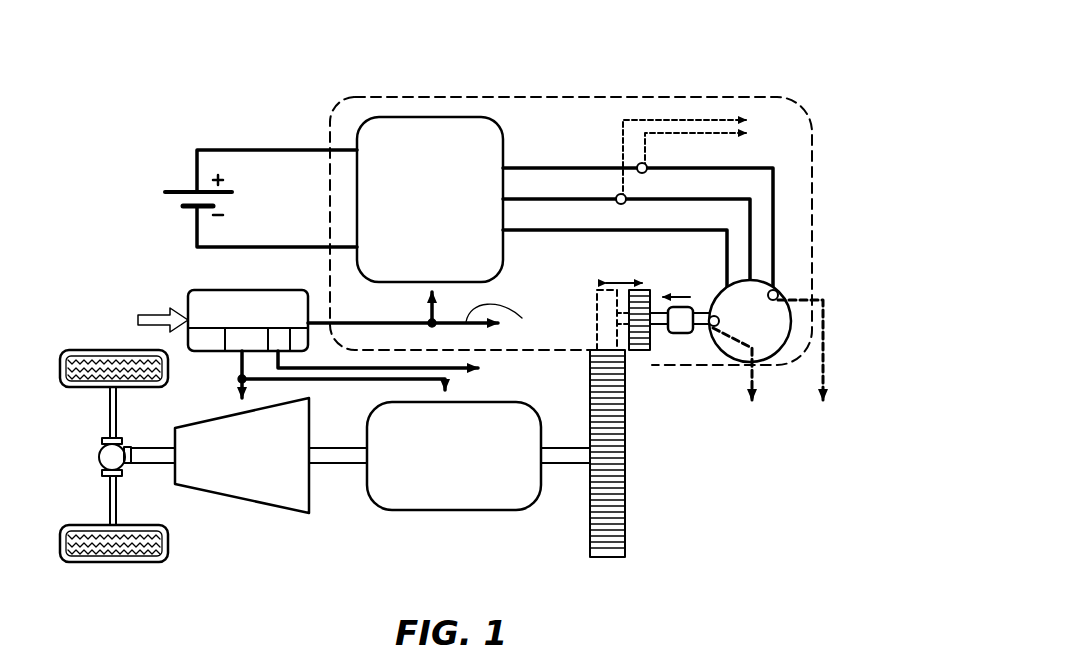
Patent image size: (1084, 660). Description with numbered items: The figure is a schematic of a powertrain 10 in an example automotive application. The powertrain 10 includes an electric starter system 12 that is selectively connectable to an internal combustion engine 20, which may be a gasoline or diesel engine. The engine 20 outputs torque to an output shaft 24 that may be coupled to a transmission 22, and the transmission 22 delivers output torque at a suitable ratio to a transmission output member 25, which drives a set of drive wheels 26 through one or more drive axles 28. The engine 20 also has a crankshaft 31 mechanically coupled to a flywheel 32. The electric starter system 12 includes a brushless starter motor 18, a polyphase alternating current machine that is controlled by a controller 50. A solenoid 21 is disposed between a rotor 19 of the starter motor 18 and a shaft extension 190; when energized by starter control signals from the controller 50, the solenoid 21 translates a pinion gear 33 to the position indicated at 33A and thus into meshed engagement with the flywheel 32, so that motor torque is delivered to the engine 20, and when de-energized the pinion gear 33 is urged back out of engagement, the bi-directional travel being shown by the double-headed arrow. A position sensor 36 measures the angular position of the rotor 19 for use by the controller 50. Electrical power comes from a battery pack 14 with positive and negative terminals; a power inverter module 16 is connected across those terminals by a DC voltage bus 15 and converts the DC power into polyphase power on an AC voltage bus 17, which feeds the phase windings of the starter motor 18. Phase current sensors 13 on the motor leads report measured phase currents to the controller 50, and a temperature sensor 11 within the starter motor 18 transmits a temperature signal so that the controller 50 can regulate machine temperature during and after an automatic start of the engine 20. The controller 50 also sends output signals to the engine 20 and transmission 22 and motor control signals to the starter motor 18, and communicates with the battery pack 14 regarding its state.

The powertrain 10 is at (697, 54).
The temperature sensor 11 is at (777, 292).
The electric starter system 12 is at (742, 97).
The phase current sensors 13 is at (625, 196).
The battery pack 14 is at (134, 188).
The DC voltage bus 15 is at (231, 150).
The power inverter module 16 is at (433, 117).
The AC voltage bus 17 is at (581, 166).
The brushless starter motor 18 is at (812, 298).
The rotor 19 is at (740, 335).
The internal combustion engine 20 is at (458, 512).
The solenoid 21 is at (700, 335).
The transmission 22 is at (245, 508).
The output shaft 24 is at (335, 466).
The transmission output member 25 is at (150, 466).
The drive wheels 26 is at (78, 350).
The drive axles 28 is at (106, 425).
The crankshaft 31 is at (565, 466).
The flywheel 32 is at (626, 515).
The pinion gear 33 is at (640, 352).
The engaged position of pinion gear 33A is at (597, 298).
The position sensor 36 is at (711, 316).
The controller 50 is at (188, 300).
The shaft extension 190 is at (660, 326).